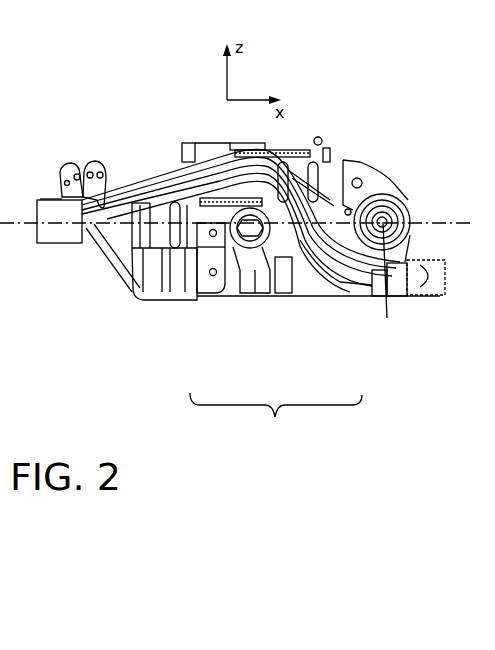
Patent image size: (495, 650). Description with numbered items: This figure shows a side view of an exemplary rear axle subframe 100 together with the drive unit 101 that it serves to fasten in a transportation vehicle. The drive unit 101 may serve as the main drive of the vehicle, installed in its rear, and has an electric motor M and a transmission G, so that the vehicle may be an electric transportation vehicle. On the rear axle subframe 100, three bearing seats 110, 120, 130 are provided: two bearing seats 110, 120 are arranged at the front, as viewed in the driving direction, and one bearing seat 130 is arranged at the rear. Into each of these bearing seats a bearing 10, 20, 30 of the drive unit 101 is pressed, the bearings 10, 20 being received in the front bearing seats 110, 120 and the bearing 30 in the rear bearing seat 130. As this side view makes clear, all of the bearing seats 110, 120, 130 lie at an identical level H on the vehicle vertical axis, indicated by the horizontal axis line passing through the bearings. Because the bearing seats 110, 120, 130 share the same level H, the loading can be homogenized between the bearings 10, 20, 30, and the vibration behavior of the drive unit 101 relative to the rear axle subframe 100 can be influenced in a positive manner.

The rear axle subframe 100 is at (348, 112).
The bearing seat 110 is at (381, 199).
The bearing seat 120 is at (412, 185).
The level H is at (445, 221).
The bearing 30 is at (122, 234).
The bearing seat 130 is at (128, 274).
The transmission G is at (219, 296).
The electric motor M is at (381, 254).
The bearing 10 is at (391, 283).
The bearing 20 is at (391, 283).
The drive unit 101 is at (276, 421).